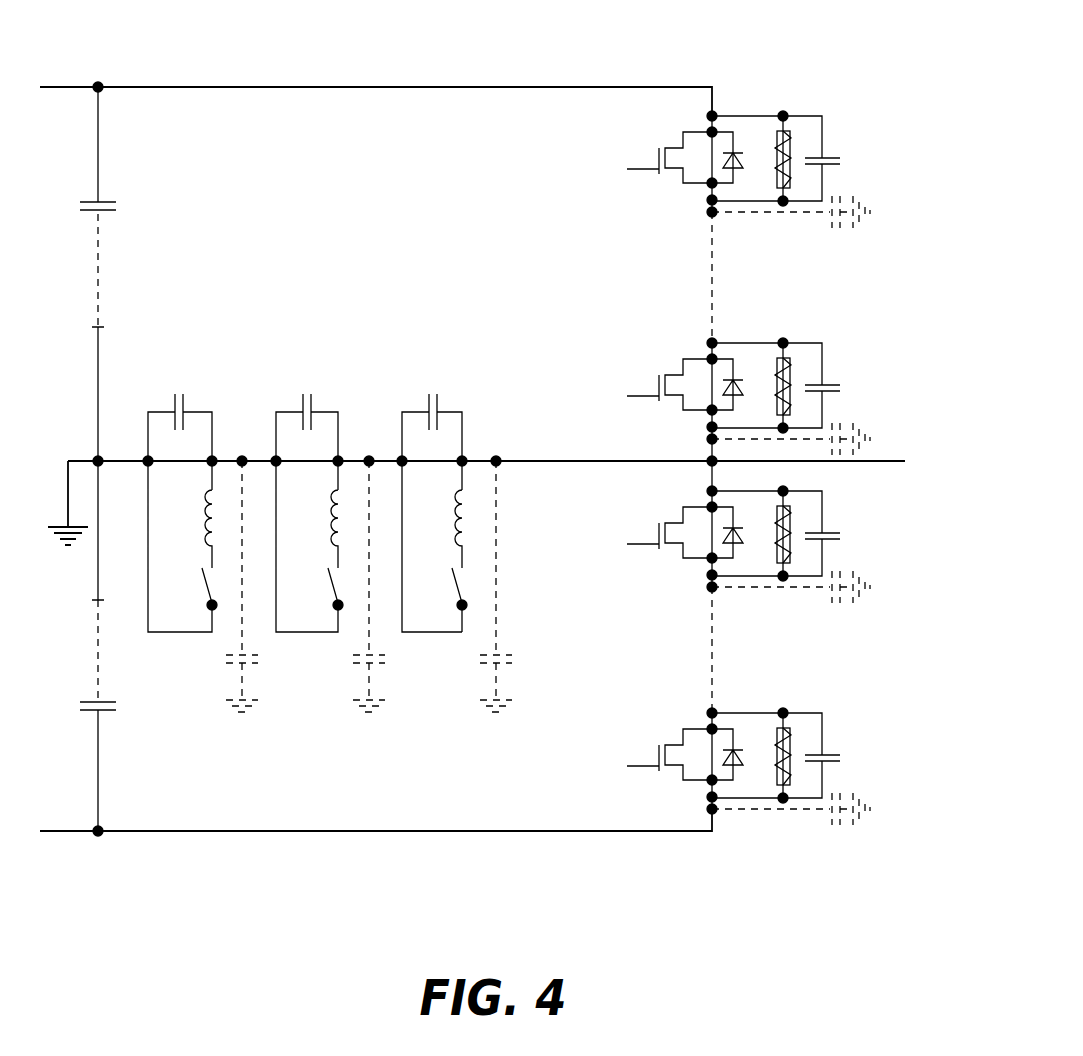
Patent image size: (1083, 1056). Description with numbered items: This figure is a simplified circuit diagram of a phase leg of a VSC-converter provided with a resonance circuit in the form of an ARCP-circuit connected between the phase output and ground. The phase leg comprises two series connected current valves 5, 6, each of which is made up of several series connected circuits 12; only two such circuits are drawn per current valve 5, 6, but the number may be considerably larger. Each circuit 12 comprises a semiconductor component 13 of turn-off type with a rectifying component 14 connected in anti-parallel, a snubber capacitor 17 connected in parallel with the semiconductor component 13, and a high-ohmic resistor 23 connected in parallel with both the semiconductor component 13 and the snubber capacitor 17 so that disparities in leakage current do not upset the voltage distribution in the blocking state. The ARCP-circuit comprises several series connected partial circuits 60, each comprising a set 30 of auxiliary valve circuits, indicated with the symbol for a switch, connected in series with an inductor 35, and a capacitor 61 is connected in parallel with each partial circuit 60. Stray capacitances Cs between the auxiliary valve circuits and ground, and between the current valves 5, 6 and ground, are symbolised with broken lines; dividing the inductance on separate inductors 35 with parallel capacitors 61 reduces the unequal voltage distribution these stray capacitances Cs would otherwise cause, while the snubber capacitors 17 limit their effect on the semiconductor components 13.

The series connected circuit 12 is at (752, 151).
The semiconductor component of turn-off type 13 is at (660, 151).
The rectifying component 14 is at (739, 170).
The snubber capacitor 17 is at (826, 150).
The high-ohmic resistor 23 is at (793, 140).
The current valve 5 is at (805, 303).
The current valve 6 is at (788, 684).
The capacitor 61 is at (426, 401).
The inductor 35 is at (466, 512).
The set of auxiliary valve circuits 30 is at (460, 590).
The partial circuit 60 is at (374, 569).
The stray capacitance Cs is at (832, 599).